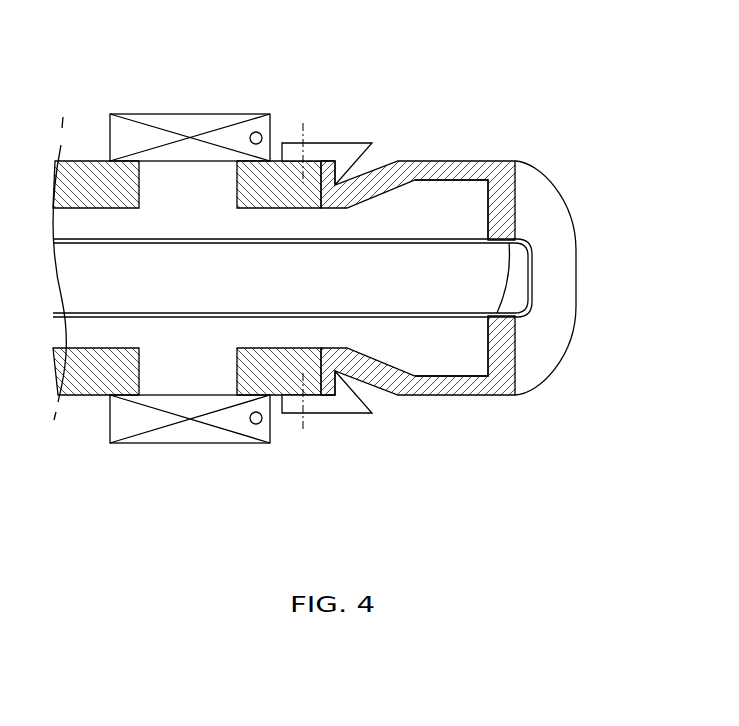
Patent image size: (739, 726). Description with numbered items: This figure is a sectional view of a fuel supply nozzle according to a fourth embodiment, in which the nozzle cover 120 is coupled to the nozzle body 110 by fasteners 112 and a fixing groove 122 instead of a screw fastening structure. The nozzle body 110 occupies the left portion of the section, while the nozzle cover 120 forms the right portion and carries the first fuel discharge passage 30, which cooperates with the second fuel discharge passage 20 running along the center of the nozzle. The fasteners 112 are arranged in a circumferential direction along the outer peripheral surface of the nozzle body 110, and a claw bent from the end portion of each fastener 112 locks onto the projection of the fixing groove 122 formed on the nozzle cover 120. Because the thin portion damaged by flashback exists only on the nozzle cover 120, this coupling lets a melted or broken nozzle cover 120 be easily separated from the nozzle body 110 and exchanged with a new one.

The second fuel discharge passage 20 is at (490, 275).
The first fuel discharge passage 30 is at (462, 342).
The nozzle body 110 is at (212, 295).
The fasteners 112 is at (330, 150).
The nozzle cover 120 is at (448, 302).
The fixing groove 122 is at (375, 167).